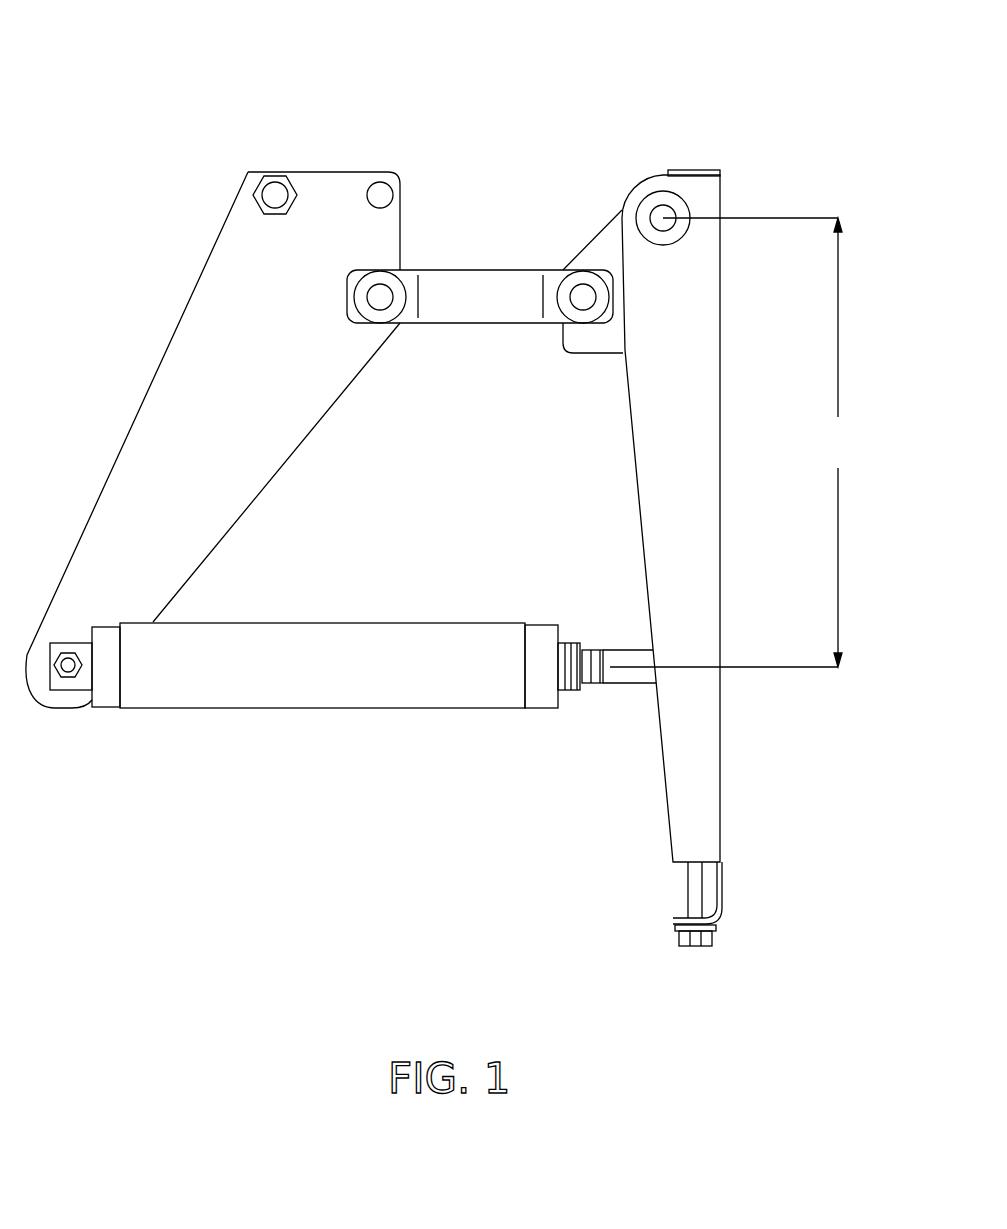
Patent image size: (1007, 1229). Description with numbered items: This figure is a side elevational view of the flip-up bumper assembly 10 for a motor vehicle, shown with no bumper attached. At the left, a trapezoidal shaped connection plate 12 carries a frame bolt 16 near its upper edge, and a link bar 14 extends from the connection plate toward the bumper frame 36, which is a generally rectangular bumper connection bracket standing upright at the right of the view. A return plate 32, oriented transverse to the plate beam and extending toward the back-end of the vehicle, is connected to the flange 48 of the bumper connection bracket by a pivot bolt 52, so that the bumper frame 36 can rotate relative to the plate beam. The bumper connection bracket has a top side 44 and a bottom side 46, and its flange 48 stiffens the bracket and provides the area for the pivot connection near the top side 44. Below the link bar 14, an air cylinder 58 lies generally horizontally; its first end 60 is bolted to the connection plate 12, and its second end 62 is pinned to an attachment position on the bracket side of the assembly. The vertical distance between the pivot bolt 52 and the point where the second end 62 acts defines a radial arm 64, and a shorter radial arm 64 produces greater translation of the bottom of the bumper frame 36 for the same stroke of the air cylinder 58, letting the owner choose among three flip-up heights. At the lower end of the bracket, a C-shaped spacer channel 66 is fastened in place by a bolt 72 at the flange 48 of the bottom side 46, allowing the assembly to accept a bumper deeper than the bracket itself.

The flip-up bumper assembly 10 is at (675, 80).
The connection plate 12 is at (147, 450).
The link bar 14 is at (480, 306).
The frame bolt 16 is at (272, 186).
The return plate 32 is at (581, 356).
The bumper frame 36 is at (724, 342).
The top side 44 is at (710, 150).
The bottom side 46 is at (665, 948).
The flange 48 is at (683, 472).
The pivot bolt 52 is at (652, 207).
The air cylinder 58 is at (287, 702).
The first end 60 is at (70, 690).
The second end 62 is at (634, 686).
The radial arm 64 is at (732, 442).
The C-shaped spacer channel 66 is at (723, 892).
The bolt 72 is at (695, 948).